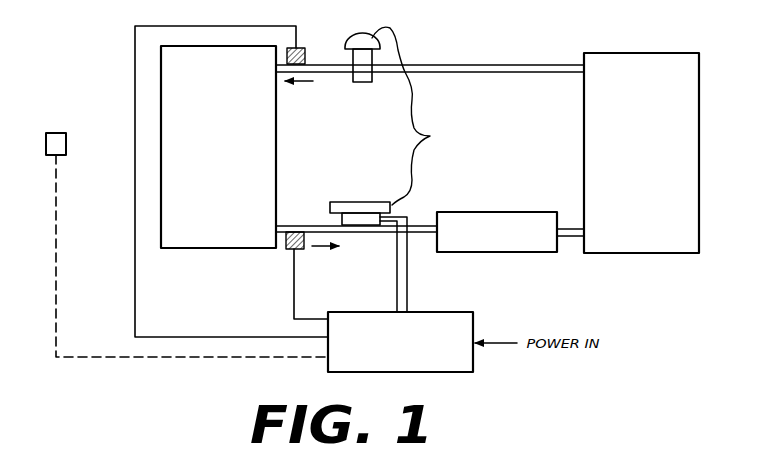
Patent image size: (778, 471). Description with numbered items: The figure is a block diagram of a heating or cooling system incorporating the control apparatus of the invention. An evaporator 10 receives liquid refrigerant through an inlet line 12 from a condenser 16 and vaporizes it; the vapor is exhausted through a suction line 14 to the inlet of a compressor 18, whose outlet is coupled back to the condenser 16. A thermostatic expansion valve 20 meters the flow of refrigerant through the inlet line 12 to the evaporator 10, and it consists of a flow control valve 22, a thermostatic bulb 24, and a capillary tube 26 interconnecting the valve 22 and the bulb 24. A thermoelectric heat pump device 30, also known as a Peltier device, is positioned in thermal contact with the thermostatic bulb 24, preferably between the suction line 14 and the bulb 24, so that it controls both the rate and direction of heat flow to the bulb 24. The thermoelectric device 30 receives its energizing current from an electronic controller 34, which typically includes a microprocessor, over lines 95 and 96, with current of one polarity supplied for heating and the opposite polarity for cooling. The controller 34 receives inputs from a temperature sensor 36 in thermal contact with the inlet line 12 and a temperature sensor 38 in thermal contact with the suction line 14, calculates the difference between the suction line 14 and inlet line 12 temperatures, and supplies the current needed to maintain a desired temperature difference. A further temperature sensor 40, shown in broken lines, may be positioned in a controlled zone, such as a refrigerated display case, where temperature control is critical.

The evaporator 10 is at (223, 192).
The inlet line 12 is at (322, 63).
The suction line 14 is at (311, 225).
The condenser 16 is at (640, 52).
The compressor 18 is at (500, 212).
The thermostatic expansion valve 20 is at (407, 56).
The flow control valve 22 is at (358, 35).
The thermostatic bulb 24 is at (362, 192).
The capillary tube 26 is at (430, 136).
The thermoelectric heat pump device 30 is at (362, 226).
The electronic controller 34 is at (437, 311).
The temperature sensor 36 is at (303, 48).
The temperature sensor 38 is at (286, 254).
The temperature sensor 40 is at (66, 143).
The line 95 is at (396, 279).
The line 96 is at (408, 281).